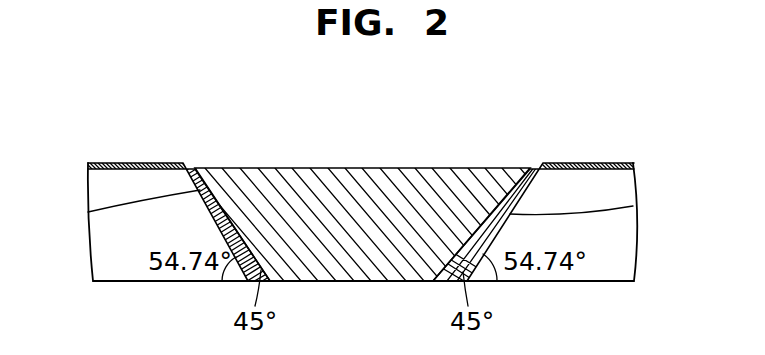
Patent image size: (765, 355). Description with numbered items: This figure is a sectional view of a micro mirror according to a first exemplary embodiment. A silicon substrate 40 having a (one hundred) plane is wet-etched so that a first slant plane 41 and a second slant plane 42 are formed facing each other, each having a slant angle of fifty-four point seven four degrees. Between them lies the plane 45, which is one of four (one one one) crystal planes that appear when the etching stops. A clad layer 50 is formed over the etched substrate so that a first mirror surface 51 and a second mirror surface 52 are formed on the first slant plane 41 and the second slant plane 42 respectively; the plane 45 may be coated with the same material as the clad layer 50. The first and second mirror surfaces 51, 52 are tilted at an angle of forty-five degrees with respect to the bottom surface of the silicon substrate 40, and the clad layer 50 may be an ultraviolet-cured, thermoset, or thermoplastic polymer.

The silicon substrate 40 is at (622, 258).
The first slant plane 41 is at (633, 206).
The second slant plane 42 is at (88, 212).
The (111) crystal plane 45 is at (379, 167).
The clad layer 50 is at (158, 160).
The first mirror surface 51 is at (527, 166).
The second mirror surface 52 is at (216, 200).